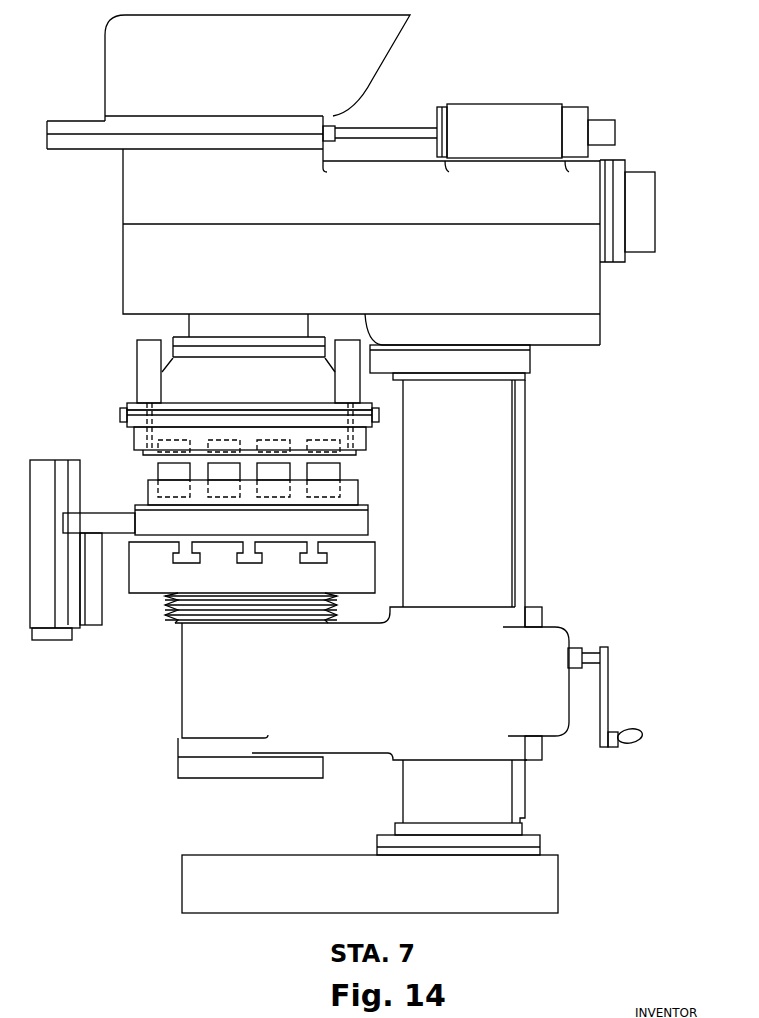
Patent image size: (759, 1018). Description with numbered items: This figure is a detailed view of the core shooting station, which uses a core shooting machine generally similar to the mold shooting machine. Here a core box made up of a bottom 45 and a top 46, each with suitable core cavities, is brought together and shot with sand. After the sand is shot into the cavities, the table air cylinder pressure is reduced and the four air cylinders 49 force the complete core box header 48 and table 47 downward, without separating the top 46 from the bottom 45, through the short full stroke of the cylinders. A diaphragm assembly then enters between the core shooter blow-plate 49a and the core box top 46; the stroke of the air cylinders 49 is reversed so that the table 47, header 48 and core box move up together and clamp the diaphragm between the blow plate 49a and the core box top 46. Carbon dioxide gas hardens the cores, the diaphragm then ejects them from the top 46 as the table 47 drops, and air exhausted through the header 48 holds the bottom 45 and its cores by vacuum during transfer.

The core box bottom 45 is at (148, 487).
The core box top 46 is at (141, 444).
The table 47 is at (152, 587).
The core box header 48 is at (358, 523).
The air cylinders 49 is at (141, 355).
The core shooter blow-plate 49a is at (365, 420).